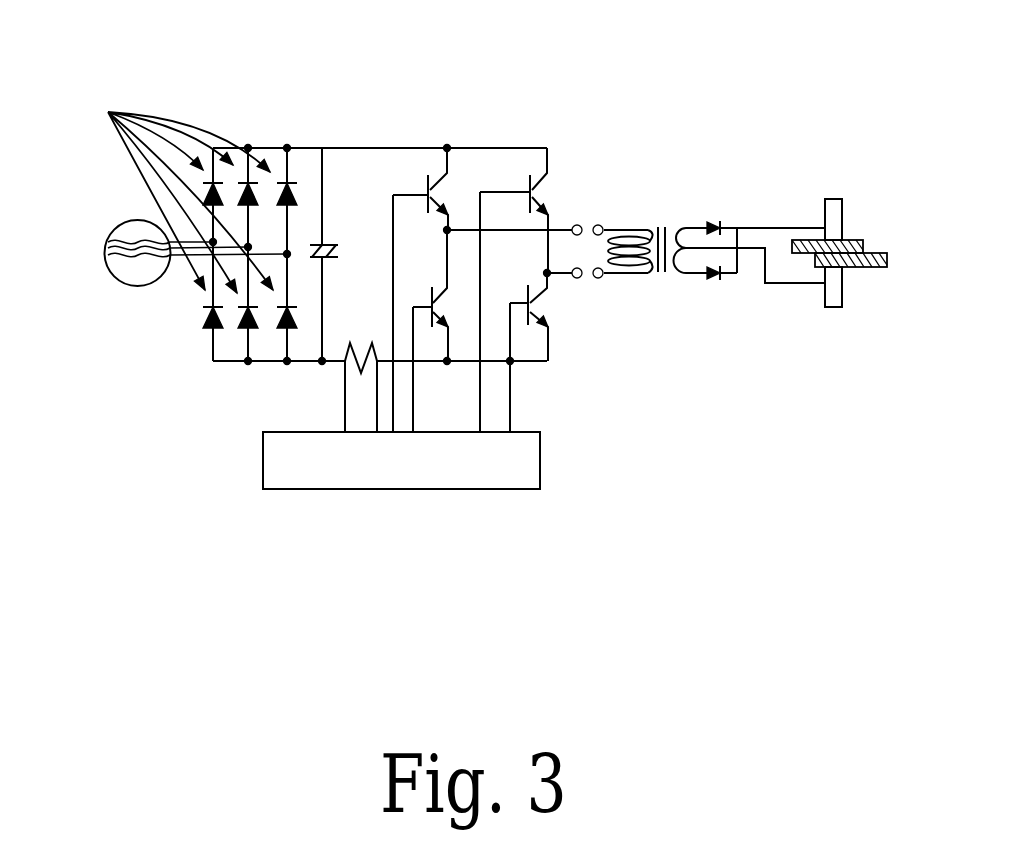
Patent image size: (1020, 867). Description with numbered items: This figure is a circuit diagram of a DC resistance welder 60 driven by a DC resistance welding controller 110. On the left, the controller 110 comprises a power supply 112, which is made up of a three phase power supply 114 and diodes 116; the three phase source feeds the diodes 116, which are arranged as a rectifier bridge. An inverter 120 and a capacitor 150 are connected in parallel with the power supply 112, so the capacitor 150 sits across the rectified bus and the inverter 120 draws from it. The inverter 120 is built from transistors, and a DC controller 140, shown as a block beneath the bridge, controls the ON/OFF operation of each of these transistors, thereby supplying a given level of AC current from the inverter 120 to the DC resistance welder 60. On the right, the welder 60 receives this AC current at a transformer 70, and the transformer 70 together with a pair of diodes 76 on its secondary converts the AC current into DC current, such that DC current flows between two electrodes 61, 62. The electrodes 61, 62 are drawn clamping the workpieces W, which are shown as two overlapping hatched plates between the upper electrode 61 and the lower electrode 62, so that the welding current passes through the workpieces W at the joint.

The resistance welding controller 110 is at (407, 97).
The power supply 112 is at (270, 118).
The three phase power supply 114 is at (143, 287).
The diodes 116 is at (165, 195).
The inverter 120 is at (470, 132).
The DC controller 140 is at (518, 480).
The capacitor 150 is at (348, 258).
The DC resistance welder 60 is at (612, 150).
The transformer 70 is at (652, 208).
The diodes 76 is at (715, 205).
The electrode 61 is at (832, 199).
The electrode 62 is at (835, 307).
The workpieces W is at (887, 258).